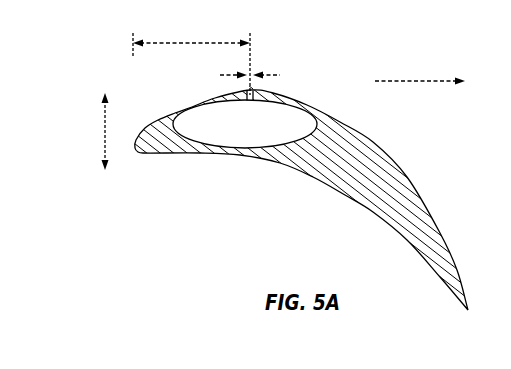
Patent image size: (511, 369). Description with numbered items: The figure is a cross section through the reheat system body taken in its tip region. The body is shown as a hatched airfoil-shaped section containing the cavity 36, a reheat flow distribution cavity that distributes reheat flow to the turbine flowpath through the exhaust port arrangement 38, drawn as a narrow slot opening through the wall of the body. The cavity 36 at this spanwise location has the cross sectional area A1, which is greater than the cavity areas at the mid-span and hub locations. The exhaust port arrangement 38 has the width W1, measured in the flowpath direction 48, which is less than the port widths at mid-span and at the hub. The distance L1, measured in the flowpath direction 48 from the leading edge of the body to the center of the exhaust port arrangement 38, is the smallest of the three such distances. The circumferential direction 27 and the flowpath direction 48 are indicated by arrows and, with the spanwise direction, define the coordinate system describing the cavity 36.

The circumferential direction 27 is at (105, 137).
The cavity 36 is at (297, 107).
The exhaust port arrangement 38 is at (255, 66).
The flowpath direction 48 is at (425, 81).
The distance L1 is at (184, 43).
The width W1 is at (226, 75).
The cross sectional area A1 is at (258, 136).